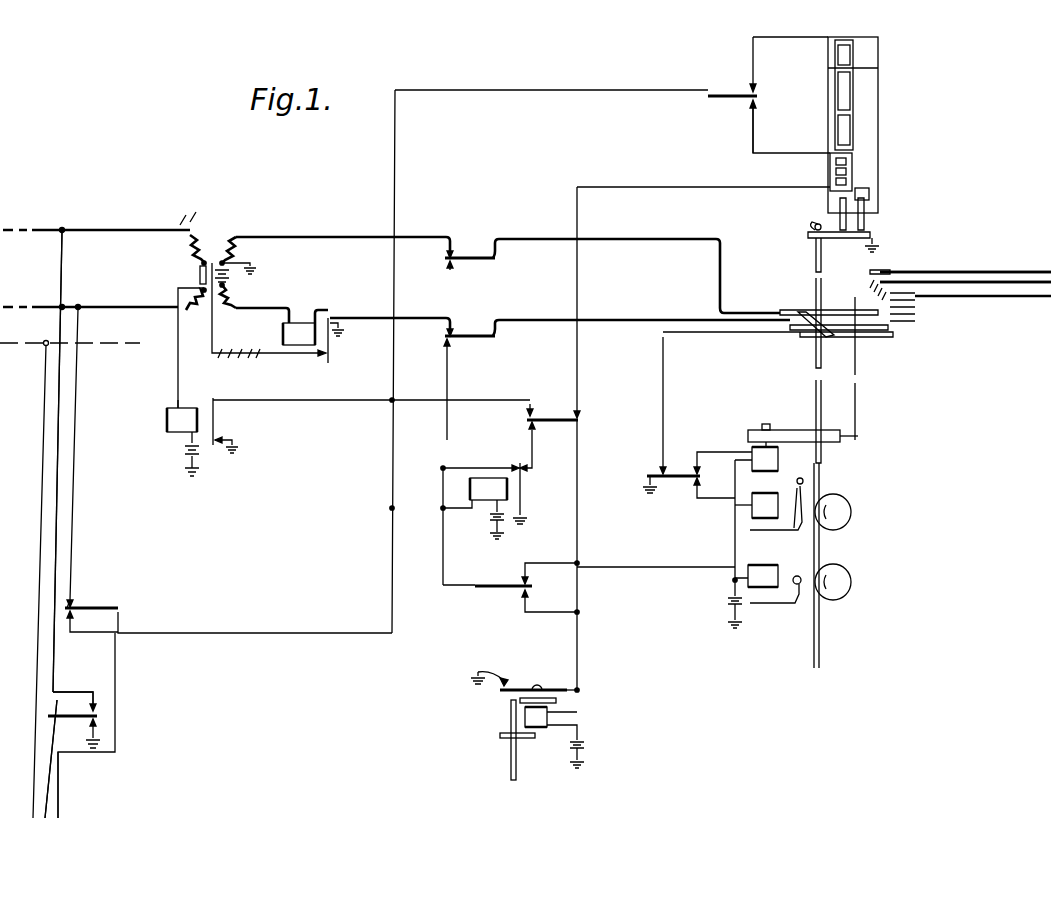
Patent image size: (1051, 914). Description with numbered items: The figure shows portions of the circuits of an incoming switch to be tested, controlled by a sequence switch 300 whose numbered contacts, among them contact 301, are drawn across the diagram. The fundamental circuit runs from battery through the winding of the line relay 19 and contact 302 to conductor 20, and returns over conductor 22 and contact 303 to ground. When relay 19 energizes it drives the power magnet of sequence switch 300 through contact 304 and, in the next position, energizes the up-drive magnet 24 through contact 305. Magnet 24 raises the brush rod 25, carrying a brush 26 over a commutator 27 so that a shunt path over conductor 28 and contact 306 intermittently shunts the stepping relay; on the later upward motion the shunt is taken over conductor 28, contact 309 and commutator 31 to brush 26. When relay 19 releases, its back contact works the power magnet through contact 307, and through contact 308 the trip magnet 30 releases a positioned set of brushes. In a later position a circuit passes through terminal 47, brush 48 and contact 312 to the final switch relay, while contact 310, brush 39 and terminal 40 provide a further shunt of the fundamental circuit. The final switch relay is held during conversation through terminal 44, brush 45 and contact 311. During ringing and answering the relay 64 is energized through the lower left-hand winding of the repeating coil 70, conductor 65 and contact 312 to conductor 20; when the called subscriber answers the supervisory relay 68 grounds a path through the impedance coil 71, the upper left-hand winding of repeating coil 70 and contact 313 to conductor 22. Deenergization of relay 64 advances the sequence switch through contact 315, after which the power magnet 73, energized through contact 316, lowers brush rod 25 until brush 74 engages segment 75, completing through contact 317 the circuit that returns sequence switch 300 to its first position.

The line relay 19 is at (484, 524).
The conductor 20 is at (60, 800).
The conductor 22 is at (47, 773).
The up-drive magnet 24 is at (714, 596).
The brush rod 25 is at (821, 392).
The brush 26 is at (840, 214).
The commutator 27 is at (830, 172).
The conductor 28 is at (388, 448).
The trip magnet 30 is at (796, 503).
The commutator 31 is at (873, 100).
The brush 39 is at (828, 312).
The terminal 40 is at (882, 268).
The terminal 44 is at (912, 300).
The brush 45 is at (888, 332).
The terminal 47 is at (900, 275).
The brush 48 is at (868, 330).
The relay 64 is at (202, 437).
The conductor 65 is at (75, 503).
The supervisory relay 68 is at (313, 340).
The repeating coil 70 is at (200, 236).
The impedance coil 71 is at (240, 360).
The power magnet 73 is at (793, 504).
The brush 74 is at (866, 216).
The segment 75 is at (869, 192).
The sequence switch 300 is at (527, 739).
The contact 301 is at (515, 688).
The contact 302 is at (90, 640).
The contact 303 is at (97, 724).
The contact 304 is at (528, 598).
The contact 305 is at (528, 580).
The contact 306 is at (748, 104).
The contact 307 is at (540, 430).
The contact 308 is at (693, 468).
The contact 309 is at (750, 88).
The contact 310 is at (458, 268).
The contact 311 is at (660, 462).
The contact 312 is at (462, 346).
The contact 313 is at (98, 710).
The contact 315 is at (530, 405).
The contact 316 is at (688, 493).
The contact 317 is at (575, 414).